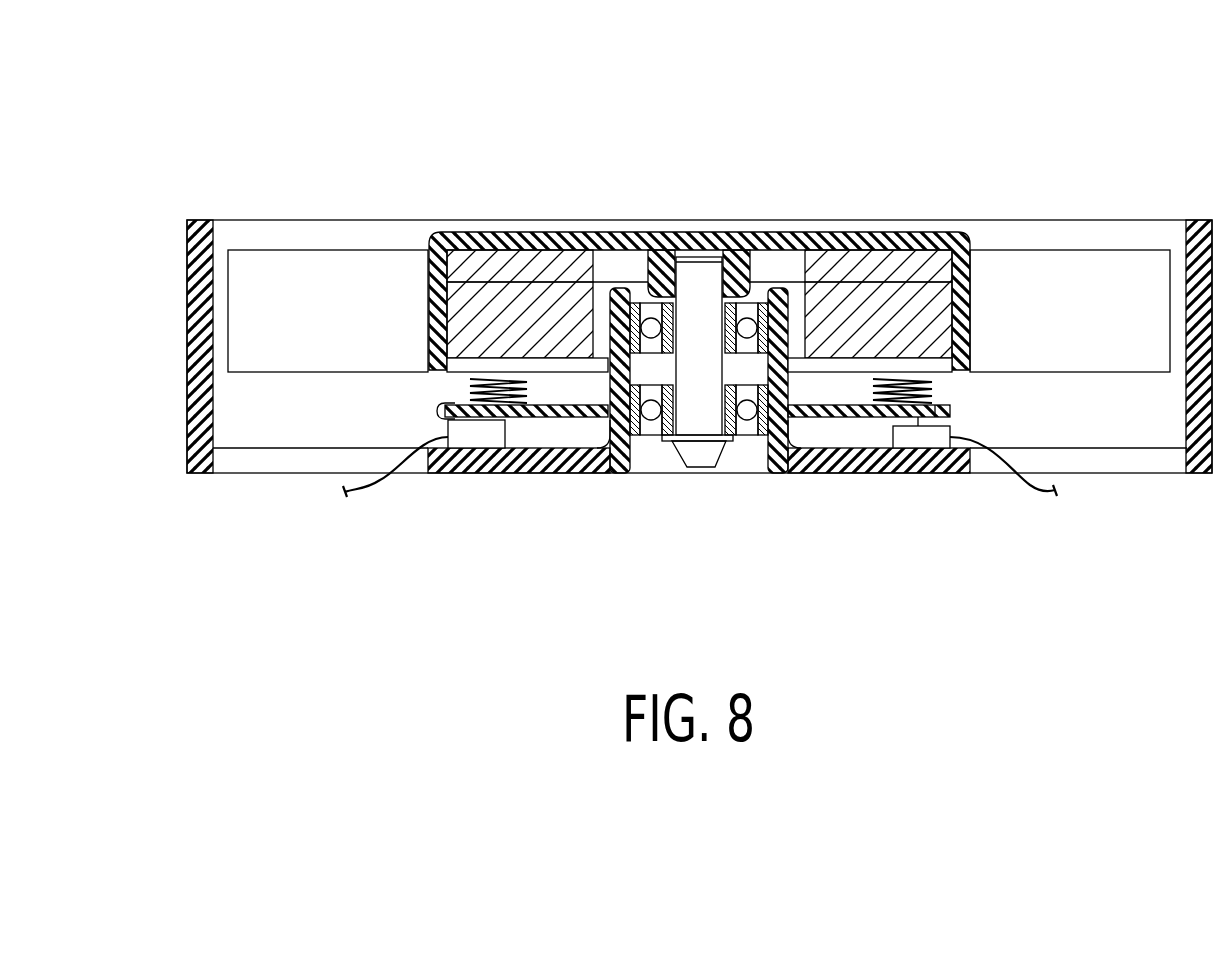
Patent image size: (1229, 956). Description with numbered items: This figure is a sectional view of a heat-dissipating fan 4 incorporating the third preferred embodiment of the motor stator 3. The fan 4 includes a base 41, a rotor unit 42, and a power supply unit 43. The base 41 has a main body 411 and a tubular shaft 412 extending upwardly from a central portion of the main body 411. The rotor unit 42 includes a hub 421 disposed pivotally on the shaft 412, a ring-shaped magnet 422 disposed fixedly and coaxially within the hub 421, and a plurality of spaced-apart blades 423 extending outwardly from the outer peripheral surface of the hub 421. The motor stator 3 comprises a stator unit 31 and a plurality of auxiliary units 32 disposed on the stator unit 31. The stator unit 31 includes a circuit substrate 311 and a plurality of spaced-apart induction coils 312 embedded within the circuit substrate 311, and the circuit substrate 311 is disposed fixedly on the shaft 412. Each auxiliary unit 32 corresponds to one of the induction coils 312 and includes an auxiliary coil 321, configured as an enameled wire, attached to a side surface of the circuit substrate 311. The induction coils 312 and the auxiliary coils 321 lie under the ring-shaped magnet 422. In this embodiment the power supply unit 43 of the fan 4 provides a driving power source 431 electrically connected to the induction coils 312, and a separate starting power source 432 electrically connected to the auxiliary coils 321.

The motor stator 3 is at (692, 408).
The stator unit 31 is at (692, 462).
The circuit substrate 311 is at (858, 420).
The induction coils 312 is at (943, 402).
The auxiliary units 32 is at (450, 362).
The auxiliary coil 321 is at (470, 383).
The heat-dissipating fan 4 is at (420, 120).
The base 41 is at (668, 444).
The main body 411 is at (798, 474).
The tubular shaft 412 is at (583, 448).
The rotor unit 42 is at (699, 286).
The hub 421 is at (690, 236).
The ring-shaped magnet 422 is at (893, 290).
The blades 423 is at (327, 250).
The power supply unit 43 is at (700, 500).
The driving power source 431 is at (945, 443).
The starting power source 432 is at (458, 448).